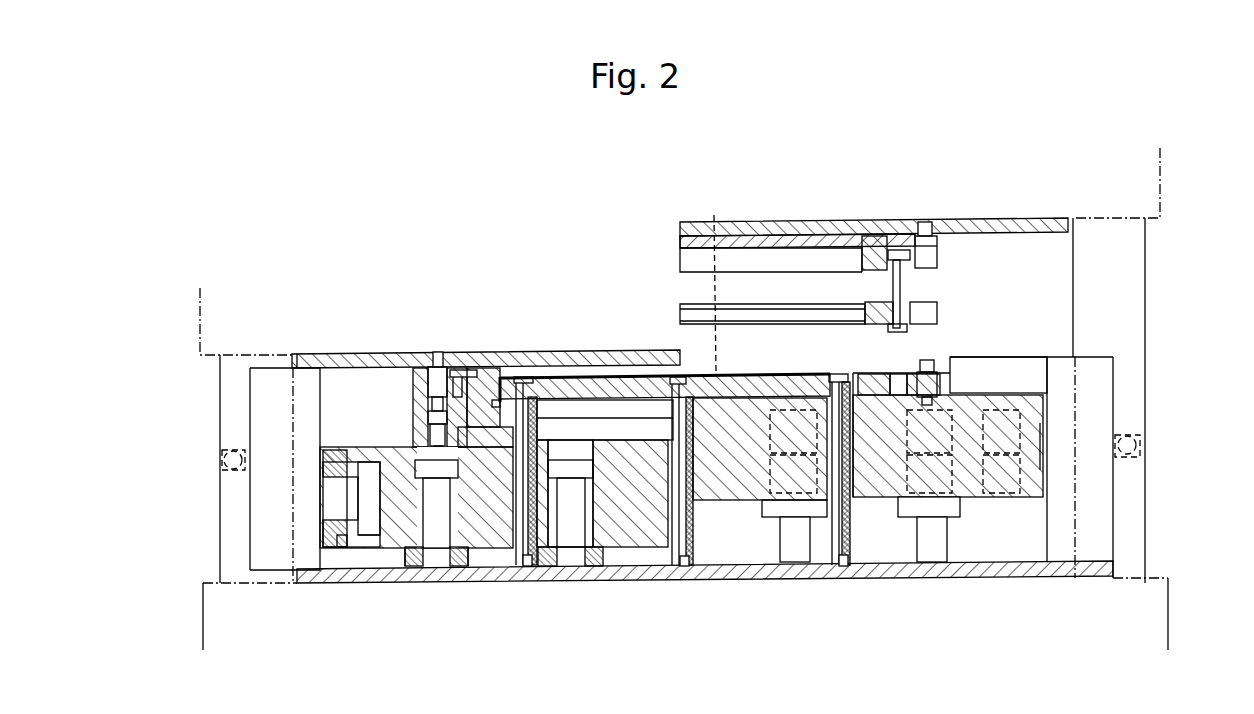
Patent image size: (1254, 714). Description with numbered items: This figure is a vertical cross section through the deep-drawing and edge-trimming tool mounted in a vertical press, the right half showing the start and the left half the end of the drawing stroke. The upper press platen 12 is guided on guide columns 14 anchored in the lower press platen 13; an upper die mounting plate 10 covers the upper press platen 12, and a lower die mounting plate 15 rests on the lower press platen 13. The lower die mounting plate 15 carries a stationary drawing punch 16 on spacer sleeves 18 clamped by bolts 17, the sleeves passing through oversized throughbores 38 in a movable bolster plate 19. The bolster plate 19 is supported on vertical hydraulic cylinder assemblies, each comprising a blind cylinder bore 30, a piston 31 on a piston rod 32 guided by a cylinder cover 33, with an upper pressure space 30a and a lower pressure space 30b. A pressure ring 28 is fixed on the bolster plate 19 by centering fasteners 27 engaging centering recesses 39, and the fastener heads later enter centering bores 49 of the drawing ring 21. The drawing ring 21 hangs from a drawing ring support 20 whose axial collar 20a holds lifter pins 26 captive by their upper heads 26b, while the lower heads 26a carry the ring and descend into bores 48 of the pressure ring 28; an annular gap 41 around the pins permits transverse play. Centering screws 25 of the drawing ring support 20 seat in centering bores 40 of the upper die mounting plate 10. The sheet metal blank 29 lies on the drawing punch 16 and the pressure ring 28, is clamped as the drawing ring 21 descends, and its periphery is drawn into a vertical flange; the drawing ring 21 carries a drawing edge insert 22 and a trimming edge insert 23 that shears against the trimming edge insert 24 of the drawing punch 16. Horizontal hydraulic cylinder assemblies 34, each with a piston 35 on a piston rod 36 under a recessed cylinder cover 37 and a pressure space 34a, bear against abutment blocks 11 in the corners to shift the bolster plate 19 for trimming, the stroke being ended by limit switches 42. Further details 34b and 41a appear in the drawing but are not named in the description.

The upper die mounting plate 10 is at (332, 358).
The abutment blocks 11 is at (268, 505).
The upper press platen 12 is at (227, 317).
The lower press platen 13 is at (217, 620).
The guide columns 14 is at (233, 393).
The lower die mounting plate 15 is at (907, 570).
The deep-drawing punch 16 is at (752, 375).
The bolts 17 is at (530, 377).
The spacer sleeves 18 is at (532, 553).
The bolster plate 19 is at (390, 512).
The drawing ring support 20 is at (777, 238).
The axial collar 20a is at (873, 248).
The drawing ring 21 is at (935, 298).
The drawing edge insert 22 is at (865, 313).
The trimming edge insert 23 is at (865, 303).
The trimming edge insert 24 is at (862, 500).
The centering screws 25 is at (920, 232).
The lifter pins 26 is at (900, 283).
The lower heads 26a is at (893, 328).
The upper heads 26b is at (888, 253).
The centering fasteners 27 is at (428, 422).
The pressure ring 28 is at (502, 445).
The sheet metal blank 29 is at (714, 276).
The blind cylinder bore 30 is at (585, 540).
The upper pressure space 30a is at (772, 450).
The lower pressure space 30b is at (788, 470).
The piston 31 is at (431, 478).
The piston rods 32 is at (455, 560).
The cylinder covers 33 is at (467, 545).
The horizontal hydraulic cylinder assemblies 34 is at (370, 535).
The pressure spaces 34a is at (368, 537).
The sleeve part 34b is at (353, 545).
The piston 35 is at (360, 490).
The piston rod 36 is at (335, 547).
The recessed cylinder cover 37 is at (327, 528).
The throughbores 38 is at (690, 568).
The centering recesses 39 is at (950, 393).
The centering bores 40 is at (928, 222).
The annular gap 41 is at (438, 366).
The bolt part 41a is at (472, 350).
The limit switches 42 is at (222, 470).
The bores 48 is at (893, 374).
The centering bores 49 is at (940, 318).